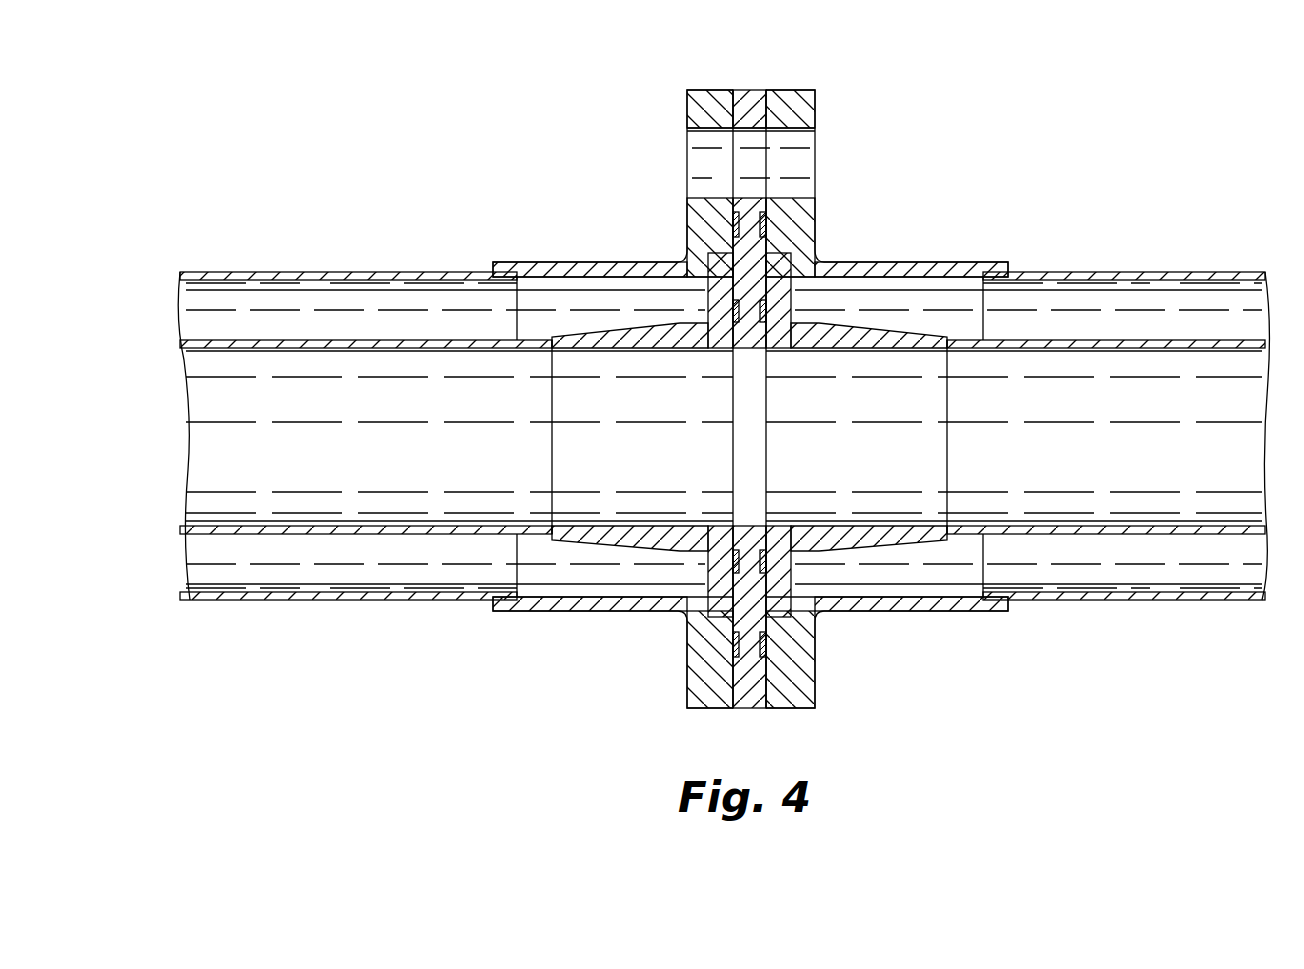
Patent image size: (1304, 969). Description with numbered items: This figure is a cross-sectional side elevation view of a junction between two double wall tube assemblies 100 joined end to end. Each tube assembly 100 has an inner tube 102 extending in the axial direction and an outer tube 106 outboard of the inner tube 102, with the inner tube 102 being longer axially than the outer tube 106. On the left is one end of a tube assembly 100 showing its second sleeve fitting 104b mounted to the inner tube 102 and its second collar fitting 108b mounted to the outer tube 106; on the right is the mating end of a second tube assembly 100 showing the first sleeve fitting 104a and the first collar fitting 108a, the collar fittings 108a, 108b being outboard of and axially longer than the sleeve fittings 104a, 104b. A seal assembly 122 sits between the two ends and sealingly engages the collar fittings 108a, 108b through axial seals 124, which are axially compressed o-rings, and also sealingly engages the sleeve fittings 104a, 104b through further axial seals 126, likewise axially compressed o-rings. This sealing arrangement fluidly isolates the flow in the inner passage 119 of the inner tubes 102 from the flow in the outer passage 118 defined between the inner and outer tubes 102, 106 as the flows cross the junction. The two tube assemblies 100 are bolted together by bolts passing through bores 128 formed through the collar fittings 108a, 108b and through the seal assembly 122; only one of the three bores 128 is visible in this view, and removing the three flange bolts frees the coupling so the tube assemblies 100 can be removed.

The double wall tube assembly 100 is at (372, 115).
The inner tube 102 is at (280, 540).
The sleeve fitting 104a is at (868, 340).
The second sleeve fitting 104b is at (618, 337).
The outer tube 106 is at (232, 270).
The collar fitting 108a is at (818, 117).
The second collar fitting 108b is at (680, 117).
The passage 118 is at (340, 312).
The inner passage 119 is at (375, 490).
The seal assembly 122 is at (742, 88).
The axial seals 124 is at (735, 228).
The axial seals 126 is at (735, 322).
The bores 128 is at (700, 172).